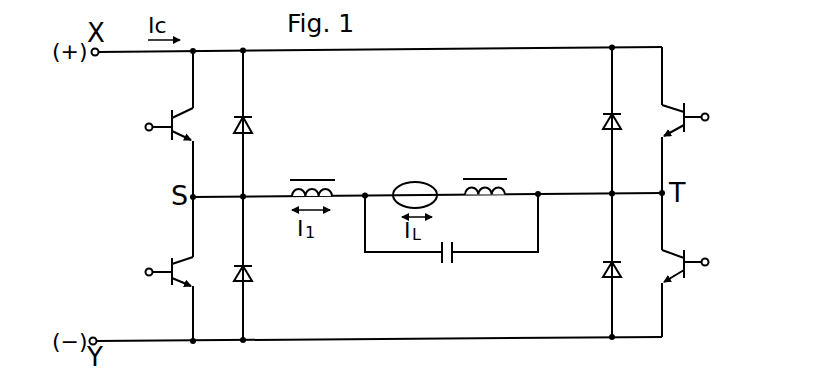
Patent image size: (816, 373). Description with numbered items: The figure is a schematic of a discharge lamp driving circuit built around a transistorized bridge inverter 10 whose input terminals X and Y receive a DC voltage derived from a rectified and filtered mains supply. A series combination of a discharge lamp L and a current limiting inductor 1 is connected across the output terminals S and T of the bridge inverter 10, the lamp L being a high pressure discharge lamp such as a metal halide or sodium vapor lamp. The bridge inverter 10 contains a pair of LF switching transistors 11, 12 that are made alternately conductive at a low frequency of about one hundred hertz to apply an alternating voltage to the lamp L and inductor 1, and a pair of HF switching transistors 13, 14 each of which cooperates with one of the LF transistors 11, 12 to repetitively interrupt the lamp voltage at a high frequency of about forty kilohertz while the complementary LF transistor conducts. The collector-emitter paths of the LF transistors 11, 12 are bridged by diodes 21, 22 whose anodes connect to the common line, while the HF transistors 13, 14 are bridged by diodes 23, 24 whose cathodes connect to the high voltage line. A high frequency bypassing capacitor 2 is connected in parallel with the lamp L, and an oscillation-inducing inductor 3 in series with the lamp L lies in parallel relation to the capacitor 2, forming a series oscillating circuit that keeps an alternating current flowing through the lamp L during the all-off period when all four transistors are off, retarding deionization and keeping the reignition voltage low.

The current limiting inductor 1 is at (313, 177).
The high frequency bypassing capacitor 2 is at (447, 265).
The oscillation-inducing inductor 3 is at (483, 177).
The transistorized bridge inverter 10 is at (571, 46).
The LF switching transistor 11 is at (690, 272).
The LF switching transistor 12 is at (171, 282).
The HF switching transistor 13 is at (169, 118).
The HF switching transistor 14 is at (688, 110).
The diode 21 is at (603, 270).
The diode 22 is at (256, 271).
The diode 23 is at (254, 125).
The diode 24 is at (603, 122).
The discharge lamp L is at (413, 182).